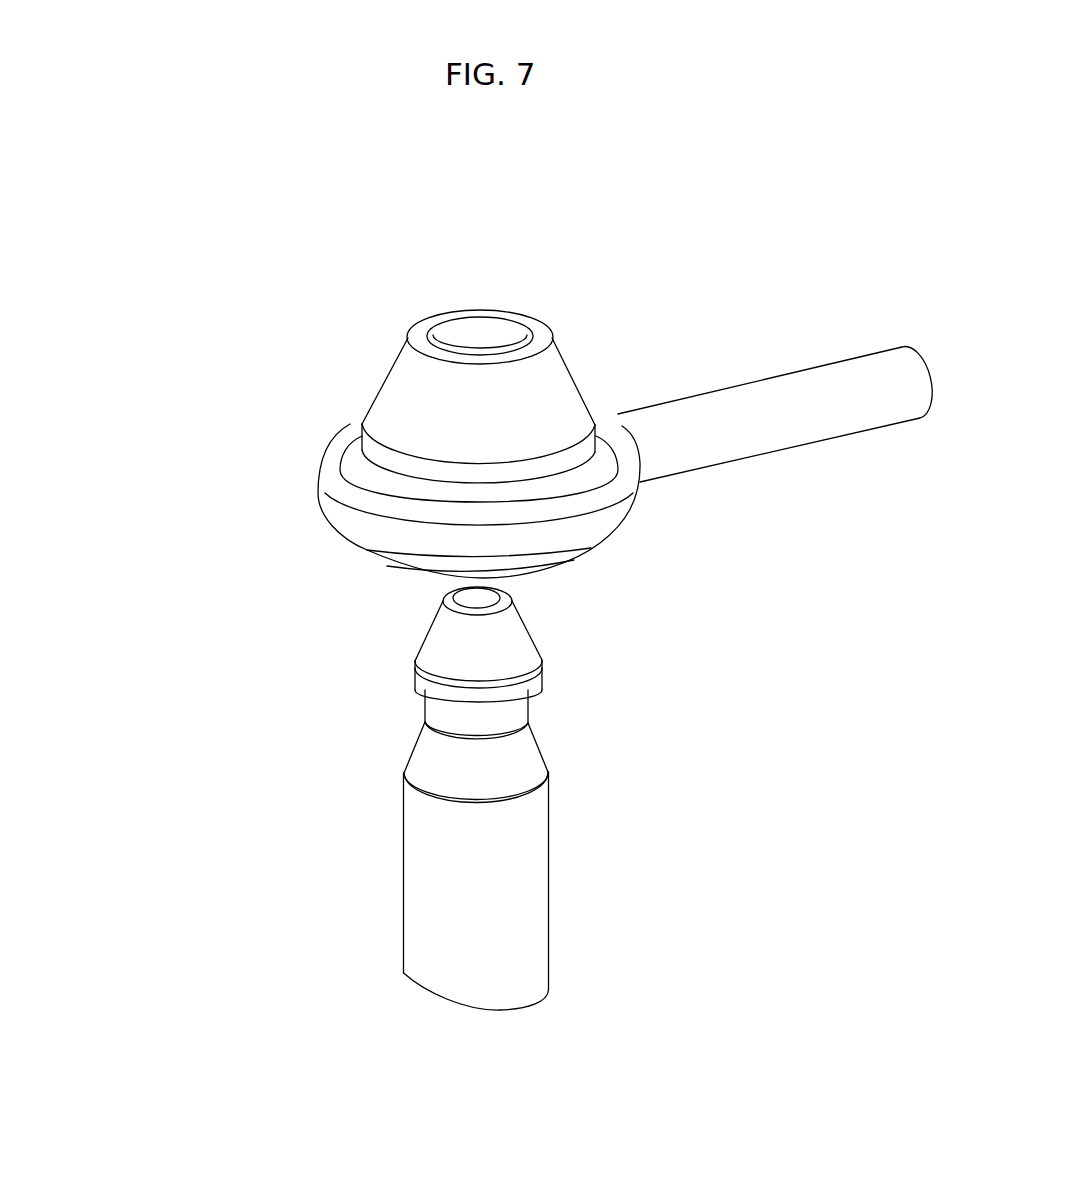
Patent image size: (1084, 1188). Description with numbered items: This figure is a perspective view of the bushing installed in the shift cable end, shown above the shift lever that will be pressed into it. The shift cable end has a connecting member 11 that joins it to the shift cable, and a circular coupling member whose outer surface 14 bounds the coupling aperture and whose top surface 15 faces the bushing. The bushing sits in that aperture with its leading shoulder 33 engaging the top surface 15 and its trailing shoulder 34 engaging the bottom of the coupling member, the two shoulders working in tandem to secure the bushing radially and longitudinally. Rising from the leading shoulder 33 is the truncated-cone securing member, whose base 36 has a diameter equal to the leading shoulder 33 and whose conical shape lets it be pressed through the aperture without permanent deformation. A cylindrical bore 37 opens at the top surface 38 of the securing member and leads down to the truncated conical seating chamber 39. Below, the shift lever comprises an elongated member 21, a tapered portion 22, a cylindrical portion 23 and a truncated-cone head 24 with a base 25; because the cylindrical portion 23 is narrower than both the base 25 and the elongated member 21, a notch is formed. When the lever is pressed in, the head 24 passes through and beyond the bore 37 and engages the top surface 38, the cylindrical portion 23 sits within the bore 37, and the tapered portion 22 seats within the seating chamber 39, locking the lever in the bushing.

The connecting member 11 is at (803, 425).
The outer surface 14 is at (610, 518).
The top surface 15 is at (388, 478).
The elongated member 21 is at (445, 868).
The tapered portion 22 is at (527, 772).
The cylindrical portion 23 is at (440, 719).
The head 24 is at (450, 640).
The base 25 is at (542, 693).
The leading shoulder 33 is at (378, 452).
The trailing shoulder 34 is at (530, 570).
The base 36 is at (532, 395).
The bore 37 is at (452, 332).
The top surface 38 is at (533, 322).
The seating chamber 39 is at (482, 345).